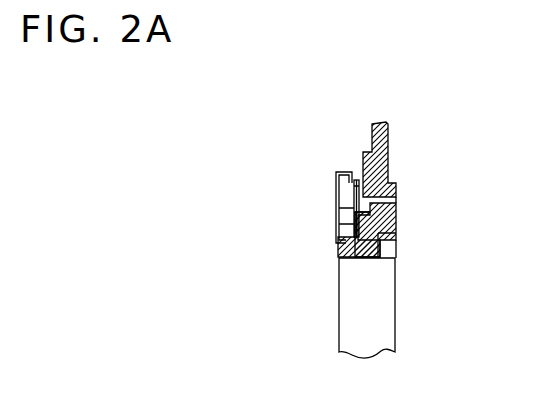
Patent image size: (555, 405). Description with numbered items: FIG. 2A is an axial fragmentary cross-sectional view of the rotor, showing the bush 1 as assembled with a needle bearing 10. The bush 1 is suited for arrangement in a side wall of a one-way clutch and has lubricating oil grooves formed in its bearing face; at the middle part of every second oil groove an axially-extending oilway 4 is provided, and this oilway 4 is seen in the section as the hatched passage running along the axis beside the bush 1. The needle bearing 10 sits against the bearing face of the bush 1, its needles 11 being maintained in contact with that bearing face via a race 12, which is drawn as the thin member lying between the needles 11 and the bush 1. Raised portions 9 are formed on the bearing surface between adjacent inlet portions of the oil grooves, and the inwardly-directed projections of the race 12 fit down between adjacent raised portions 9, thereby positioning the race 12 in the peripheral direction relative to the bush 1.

The bush 1 is at (386, 137).
The axially-extending oilway 4 is at (395, 208).
The raised portions 9 is at (338, 248).
The needle bearing 10 is at (299, 143).
The needles 11 is at (336, 199).
The race 12 is at (357, 178).